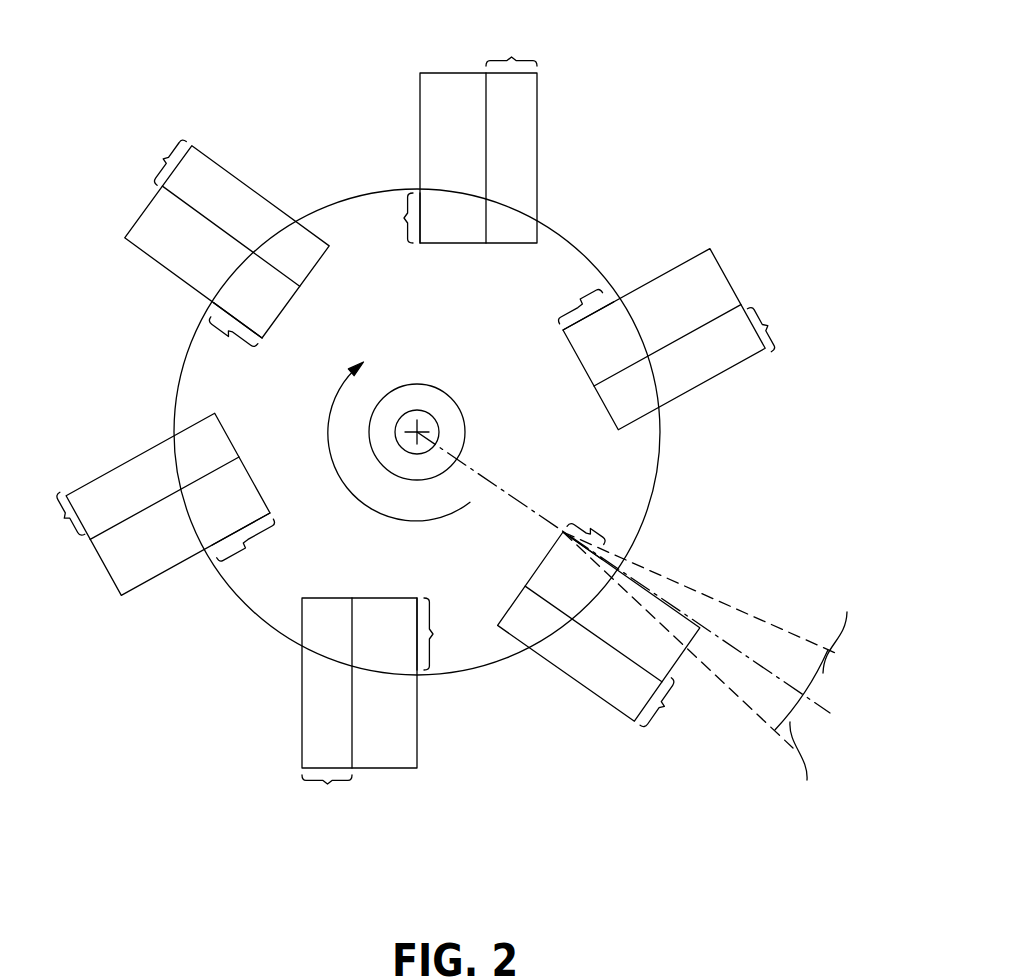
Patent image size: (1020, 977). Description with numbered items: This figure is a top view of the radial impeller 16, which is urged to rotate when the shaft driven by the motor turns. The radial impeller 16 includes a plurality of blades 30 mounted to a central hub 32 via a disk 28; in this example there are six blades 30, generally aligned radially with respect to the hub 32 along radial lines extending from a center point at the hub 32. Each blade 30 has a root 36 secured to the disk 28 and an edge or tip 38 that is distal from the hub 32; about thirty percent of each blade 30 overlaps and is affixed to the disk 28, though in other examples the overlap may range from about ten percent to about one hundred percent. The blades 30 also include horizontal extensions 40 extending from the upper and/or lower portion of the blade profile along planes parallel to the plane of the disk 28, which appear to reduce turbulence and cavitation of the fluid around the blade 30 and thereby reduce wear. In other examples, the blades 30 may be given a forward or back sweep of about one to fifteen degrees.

The radial impeller 16 is at (461, 419).
The disk 28 is at (562, 233).
The blades 30 is at (428, 418).
The hub 32 is at (437, 388).
The root 36 is at (411, 431).
The tip 38 is at (457, 72).
The horizontal extensions 40 is at (416, 423).